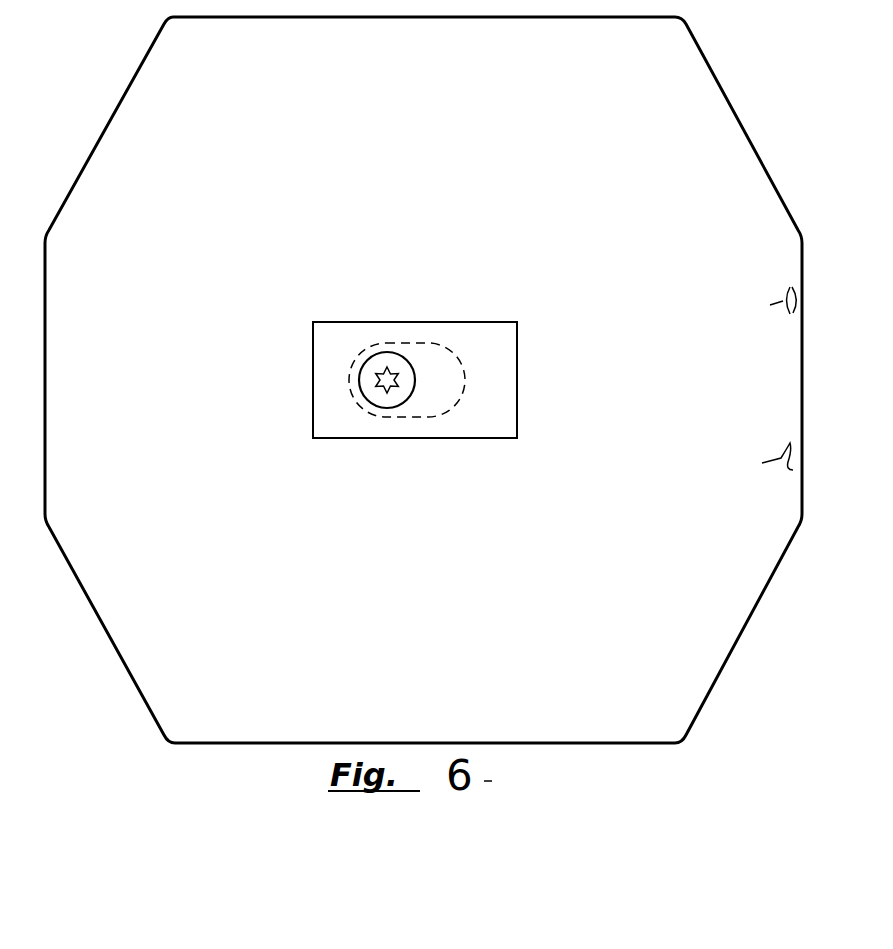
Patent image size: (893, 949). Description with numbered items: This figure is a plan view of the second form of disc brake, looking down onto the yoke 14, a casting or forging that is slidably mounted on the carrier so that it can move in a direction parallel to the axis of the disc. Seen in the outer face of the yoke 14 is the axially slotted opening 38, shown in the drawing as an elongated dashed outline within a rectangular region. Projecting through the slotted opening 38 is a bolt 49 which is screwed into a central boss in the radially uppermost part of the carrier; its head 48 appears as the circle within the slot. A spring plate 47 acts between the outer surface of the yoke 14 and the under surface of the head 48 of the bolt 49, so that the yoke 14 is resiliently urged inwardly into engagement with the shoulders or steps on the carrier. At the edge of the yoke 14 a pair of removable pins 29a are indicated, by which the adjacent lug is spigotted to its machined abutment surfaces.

The yoke 14 is at (429, 634).
The removable pins 29a is at (755, 384).
The axially slotted opening 38 is at (421, 356).
The spring plate 47 is at (458, 336).
The head 48 is at (403, 391).
The bolt 49 is at (380, 394).